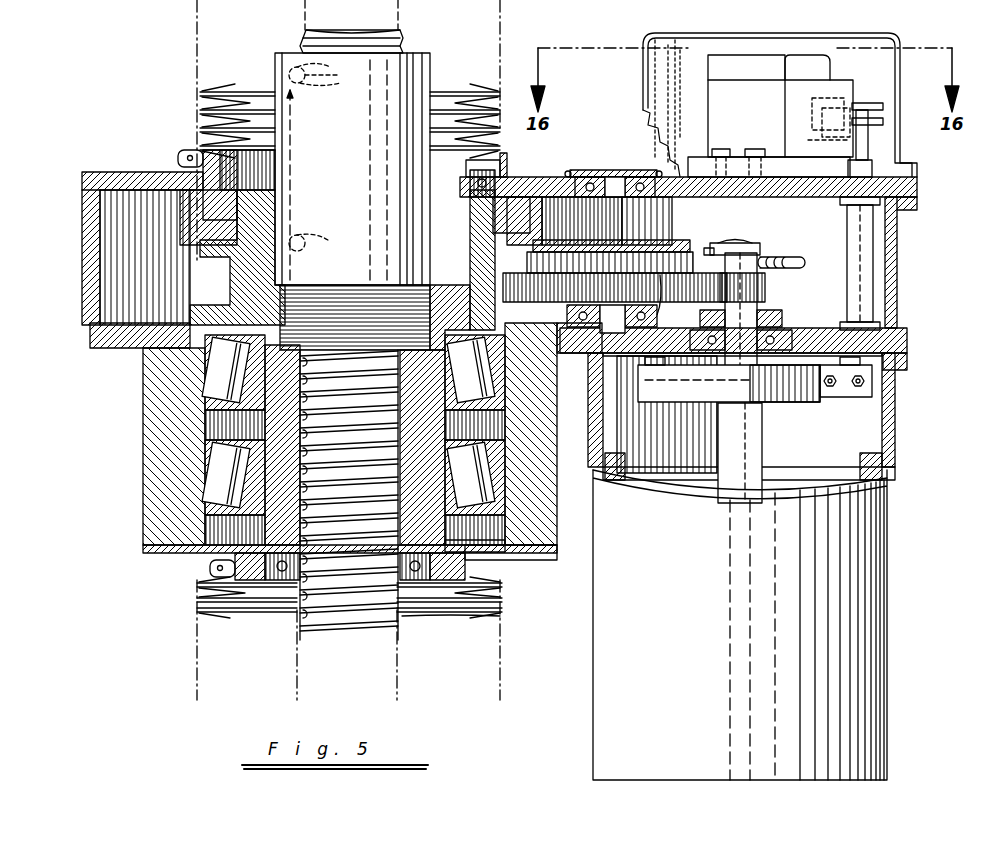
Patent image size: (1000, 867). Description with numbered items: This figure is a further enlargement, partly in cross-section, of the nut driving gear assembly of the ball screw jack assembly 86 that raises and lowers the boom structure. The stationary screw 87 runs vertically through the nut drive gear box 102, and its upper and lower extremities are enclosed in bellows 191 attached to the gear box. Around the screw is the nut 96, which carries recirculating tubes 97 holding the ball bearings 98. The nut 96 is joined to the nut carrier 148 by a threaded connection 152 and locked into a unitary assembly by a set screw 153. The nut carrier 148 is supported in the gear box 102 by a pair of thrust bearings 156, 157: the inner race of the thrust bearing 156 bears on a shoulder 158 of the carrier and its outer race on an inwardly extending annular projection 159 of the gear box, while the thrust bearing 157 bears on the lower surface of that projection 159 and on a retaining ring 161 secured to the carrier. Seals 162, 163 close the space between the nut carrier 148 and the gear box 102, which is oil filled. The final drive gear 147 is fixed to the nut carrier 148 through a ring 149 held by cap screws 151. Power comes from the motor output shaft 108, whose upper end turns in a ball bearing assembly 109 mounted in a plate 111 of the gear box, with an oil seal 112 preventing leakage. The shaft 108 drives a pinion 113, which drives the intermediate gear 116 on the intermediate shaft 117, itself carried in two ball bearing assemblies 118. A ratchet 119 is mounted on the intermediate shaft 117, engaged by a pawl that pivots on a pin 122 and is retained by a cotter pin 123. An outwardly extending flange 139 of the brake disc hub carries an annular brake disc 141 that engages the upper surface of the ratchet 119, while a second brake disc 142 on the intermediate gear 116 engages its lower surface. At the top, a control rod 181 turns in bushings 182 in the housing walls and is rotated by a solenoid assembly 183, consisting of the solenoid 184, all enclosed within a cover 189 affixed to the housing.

The ball screw jack assembly 86 is at (190, 102).
The screw 87 is at (400, 46).
The nut 96 is at (413, 90).
The recirculating tubes 97 is at (291, 166).
The ball bearings 98 is at (300, 83).
The nut drive gear box 102 is at (85, 292).
The output shaft 108 is at (742, 442).
The ball bearing assembly 109 is at (760, 352).
The plate 111 is at (900, 348).
The oil seal 112 is at (758, 312).
The pinion 113 is at (757, 290).
The intermediate gear 116 is at (570, 316).
The intermediate shaft 117 is at (614, 180).
The ball bearing assemblies 118 is at (584, 176).
The ratchet 119 is at (706, 248).
The pin 122 is at (745, 246).
The cotter pin 123 is at (730, 244).
The flange 139 is at (688, 255).
The brake disc 141 is at (652, 258).
The brake disc 142 is at (659, 296).
The final drive gear 147 is at (550, 196).
The nut carrier 148 is at (372, 272).
The ring 149 is at (530, 245).
The cap screws 151 is at (510, 196).
The threaded connection 152 is at (282, 305).
The set screw 153 is at (428, 320).
The thrust bearing 156 is at (205, 382).
The thrust bearing 157 is at (205, 468).
The shoulder 158 is at (482, 342).
The annular projection 159 is at (520, 552).
The retaining ring 161 is at (452, 522).
The seal 162 is at (500, 586).
The seal 163 is at (496, 170).
The control rod 181 is at (848, 244).
The bushings 182 is at (840, 326).
The solenoid assembly 183 is at (695, 102).
The solenoid 184 is at (740, 117).
The cover 189 is at (900, 167).
The bellows 191 is at (500, 616).